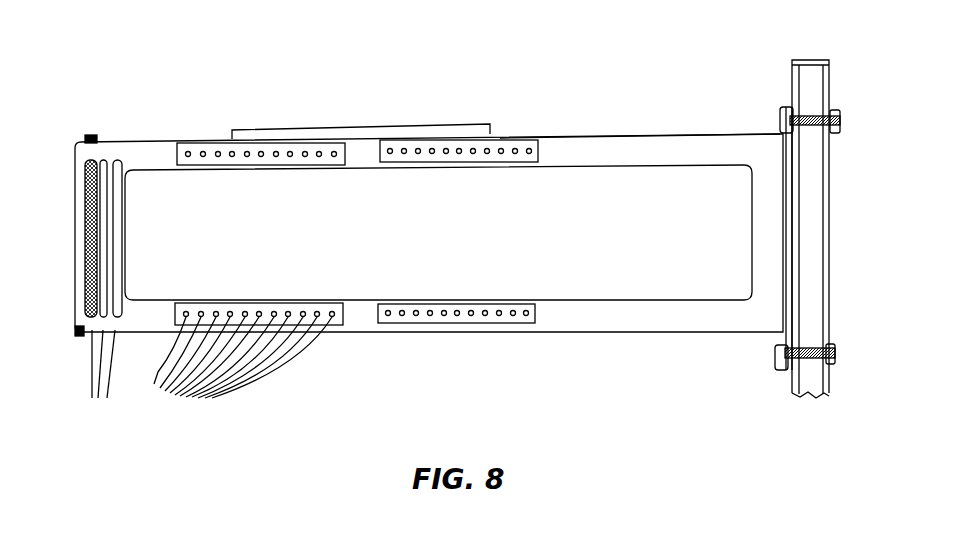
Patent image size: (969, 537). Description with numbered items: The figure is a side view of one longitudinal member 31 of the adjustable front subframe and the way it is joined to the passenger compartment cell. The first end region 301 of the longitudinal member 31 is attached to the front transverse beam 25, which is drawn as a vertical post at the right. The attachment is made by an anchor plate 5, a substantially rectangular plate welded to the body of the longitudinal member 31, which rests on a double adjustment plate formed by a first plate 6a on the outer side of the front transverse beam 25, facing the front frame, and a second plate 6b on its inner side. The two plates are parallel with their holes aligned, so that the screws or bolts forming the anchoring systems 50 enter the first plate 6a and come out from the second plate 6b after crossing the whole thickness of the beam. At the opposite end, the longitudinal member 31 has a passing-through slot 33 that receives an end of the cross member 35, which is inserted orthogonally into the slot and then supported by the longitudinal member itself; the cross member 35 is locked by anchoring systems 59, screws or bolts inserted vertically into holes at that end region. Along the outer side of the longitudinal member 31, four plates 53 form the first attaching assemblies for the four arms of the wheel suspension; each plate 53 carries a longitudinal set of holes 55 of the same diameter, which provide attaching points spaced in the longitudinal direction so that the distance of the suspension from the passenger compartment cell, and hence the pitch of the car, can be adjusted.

The longitudinal member 31 is at (400, 345).
The first end region 301 is at (760, 150).
The cross member 35 is at (85, 240).
The anchoring systems 59 is at (90, 138).
The passing-through slot 33 is at (102, 375).
The plate 53 is at (182, 146).
The holes 55 is at (238, 362).
The anchor plate 5 is at (783, 287).
The anchoring systems 50 is at (781, 112).
The front transverse beam 25 is at (812, 72).
The first plate 6a is at (797, 62).
The second plate 6b is at (831, 62).